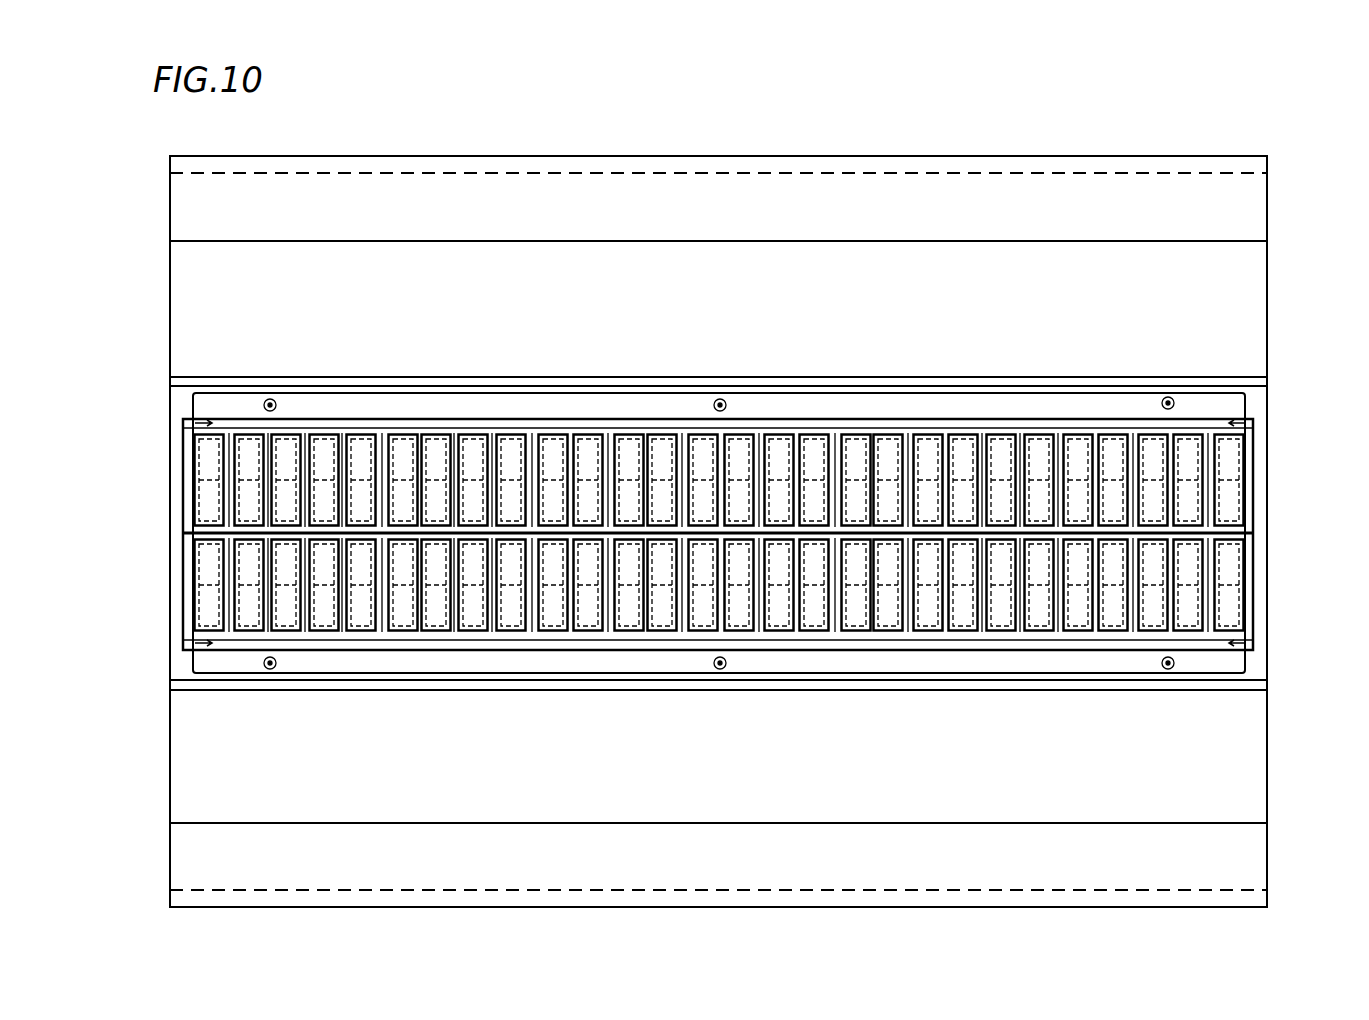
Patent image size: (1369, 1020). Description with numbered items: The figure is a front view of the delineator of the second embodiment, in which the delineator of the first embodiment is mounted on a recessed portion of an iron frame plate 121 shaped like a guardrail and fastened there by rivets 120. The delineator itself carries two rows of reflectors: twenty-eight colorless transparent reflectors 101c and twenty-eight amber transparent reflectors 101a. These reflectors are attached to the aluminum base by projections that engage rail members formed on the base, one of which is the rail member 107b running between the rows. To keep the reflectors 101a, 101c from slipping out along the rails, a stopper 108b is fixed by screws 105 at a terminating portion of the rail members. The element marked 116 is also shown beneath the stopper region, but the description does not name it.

The iron frame plate 121 is at (1028, 263).
The rivets 120 is at (1168, 397).
The screws 105 is at (1252, 421).
The colorless transparent reflectors 101c is at (1227, 563).
The stopper 108b is at (1257, 595).
The base plate 116 is at (1230, 663).
The amber transparent reflectors 101a is at (1183, 507).
The rail member 107b is at (200, 533).